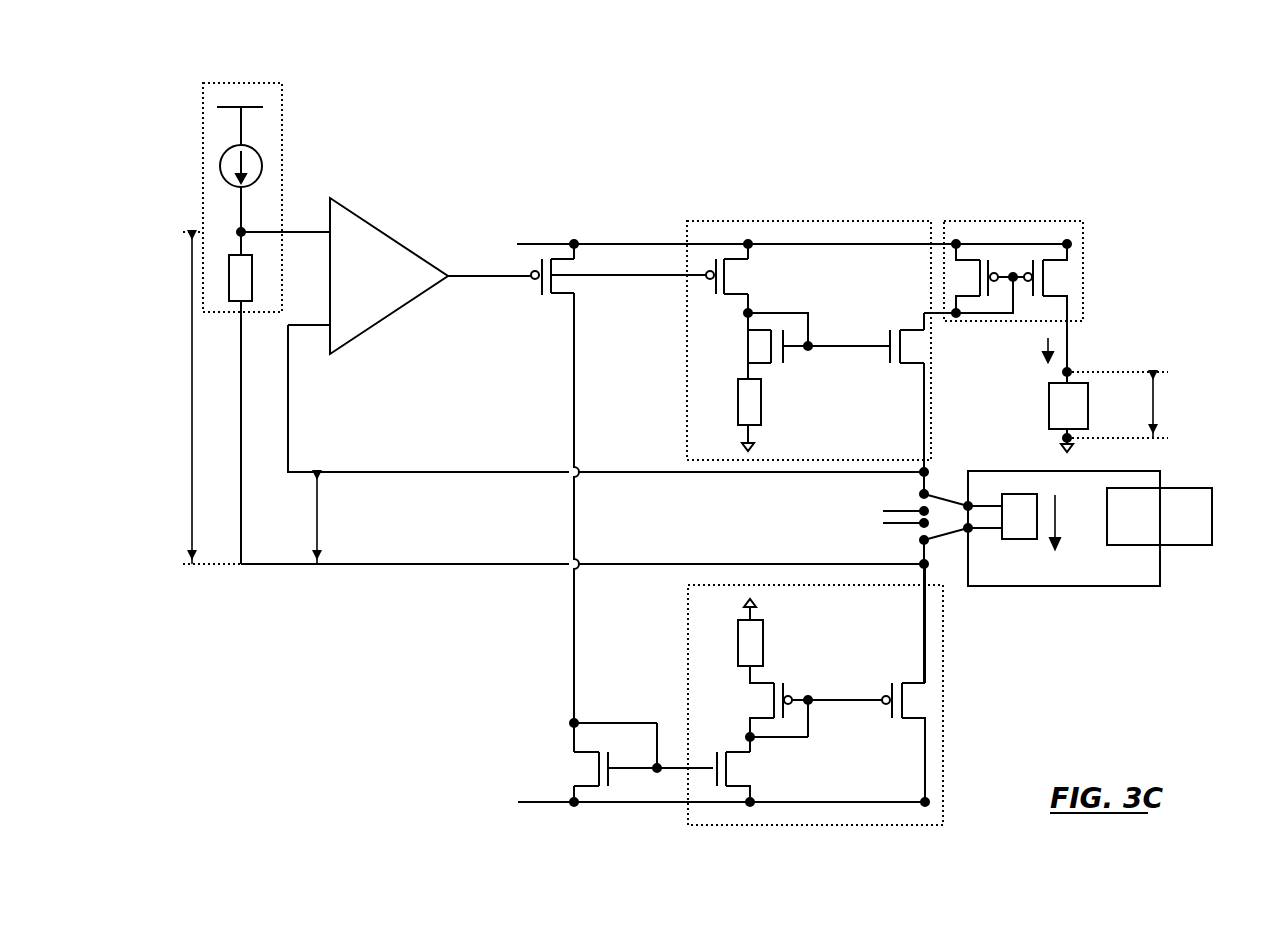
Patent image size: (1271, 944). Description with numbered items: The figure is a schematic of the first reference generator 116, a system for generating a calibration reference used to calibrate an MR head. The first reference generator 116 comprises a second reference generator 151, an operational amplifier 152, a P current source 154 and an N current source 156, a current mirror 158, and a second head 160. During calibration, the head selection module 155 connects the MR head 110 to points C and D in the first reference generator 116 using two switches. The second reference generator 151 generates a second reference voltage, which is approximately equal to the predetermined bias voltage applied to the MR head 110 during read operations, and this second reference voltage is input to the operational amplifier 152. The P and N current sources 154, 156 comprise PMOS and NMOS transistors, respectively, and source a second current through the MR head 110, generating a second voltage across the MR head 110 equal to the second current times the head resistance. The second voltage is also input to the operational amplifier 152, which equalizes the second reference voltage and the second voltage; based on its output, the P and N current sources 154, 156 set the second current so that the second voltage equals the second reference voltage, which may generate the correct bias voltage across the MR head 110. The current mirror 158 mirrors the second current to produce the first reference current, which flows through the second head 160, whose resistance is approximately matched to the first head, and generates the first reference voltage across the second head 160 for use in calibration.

The first reference generator 116 is at (654, 170).
The second reference generator 151 is at (283, 173).
The operational amplifier 152 is at (365, 217).
The P current source 154 is at (768, 221).
The N current source 156 is at (943, 680).
The current mirror 158 is at (990, 221).
The second head 160 is at (1049, 400).
The MR head 110 is at (1015, 540).
The head selection module 155 is at (1178, 545).